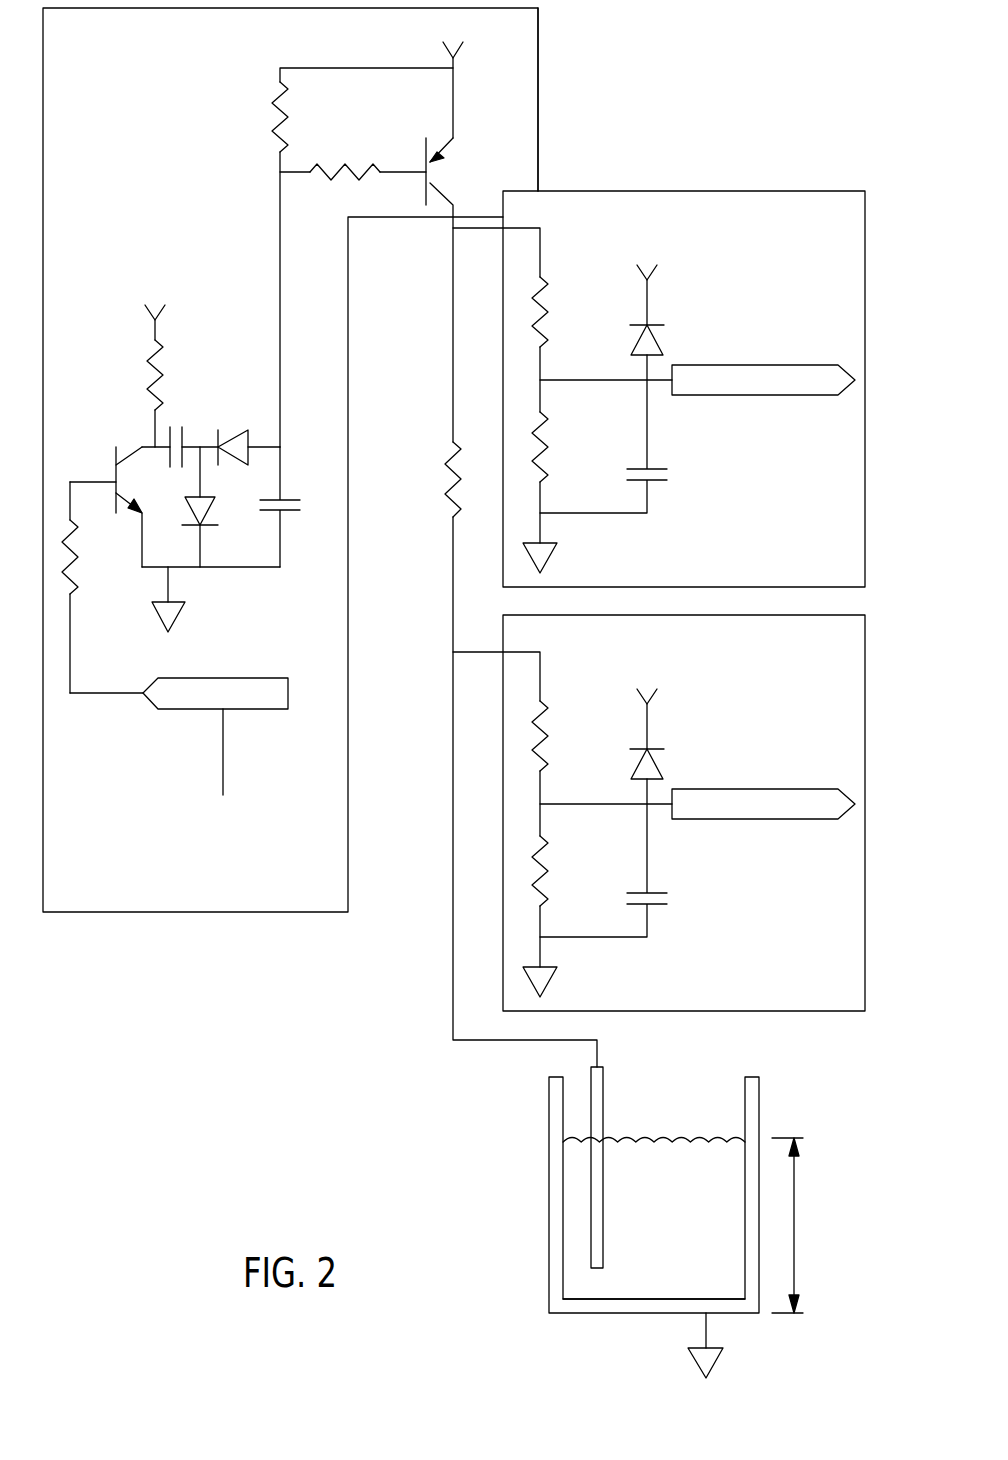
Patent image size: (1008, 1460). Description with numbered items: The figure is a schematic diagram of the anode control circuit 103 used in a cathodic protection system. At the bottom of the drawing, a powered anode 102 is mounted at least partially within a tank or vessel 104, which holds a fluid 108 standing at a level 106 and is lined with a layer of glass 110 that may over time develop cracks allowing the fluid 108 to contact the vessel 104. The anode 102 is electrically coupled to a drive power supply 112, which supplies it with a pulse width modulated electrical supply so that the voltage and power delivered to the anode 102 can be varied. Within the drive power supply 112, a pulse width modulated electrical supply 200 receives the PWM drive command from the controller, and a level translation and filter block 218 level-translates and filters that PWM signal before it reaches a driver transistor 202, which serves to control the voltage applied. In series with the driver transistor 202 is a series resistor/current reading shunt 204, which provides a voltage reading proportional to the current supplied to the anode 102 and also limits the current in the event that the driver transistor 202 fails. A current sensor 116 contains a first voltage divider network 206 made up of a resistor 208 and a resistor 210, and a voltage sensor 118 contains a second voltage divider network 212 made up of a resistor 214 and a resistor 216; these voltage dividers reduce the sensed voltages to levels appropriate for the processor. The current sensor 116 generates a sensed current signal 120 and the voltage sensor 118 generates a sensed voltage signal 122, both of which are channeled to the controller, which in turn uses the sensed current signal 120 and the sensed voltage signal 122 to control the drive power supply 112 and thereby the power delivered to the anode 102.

The powered anode 102 is at (604, 1107).
The anode control circuit 103 is at (226, 955).
The vessel 104 is at (760, 1107).
The level 106 is at (795, 1207).
The fluid 108 is at (695, 1236).
The glass 110 is at (575, 1307).
The drive power supply 112 is at (538, 98).
The current sensor 116 is at (740, 191).
The voltage sensor 118 is at (733, 1012).
The sensed current signal 120 is at (659, 380).
The sensed voltage signal 122 is at (697, 826).
The pulse width modulated electrical supply 200 is at (208, 677).
The driver transistor 202 is at (436, 163).
The series resistor/current reading shunt 204 is at (448, 462).
The first voltage divider network 206 is at (654, 386).
The resistor 208 is at (547, 312).
The resistor 210 is at (548, 447).
The second voltage divider network 212 is at (654, 810).
The resistor 214 is at (582, 736).
The resistor 216 is at (583, 871).
The level translation and filter block 218 is at (233, 413).